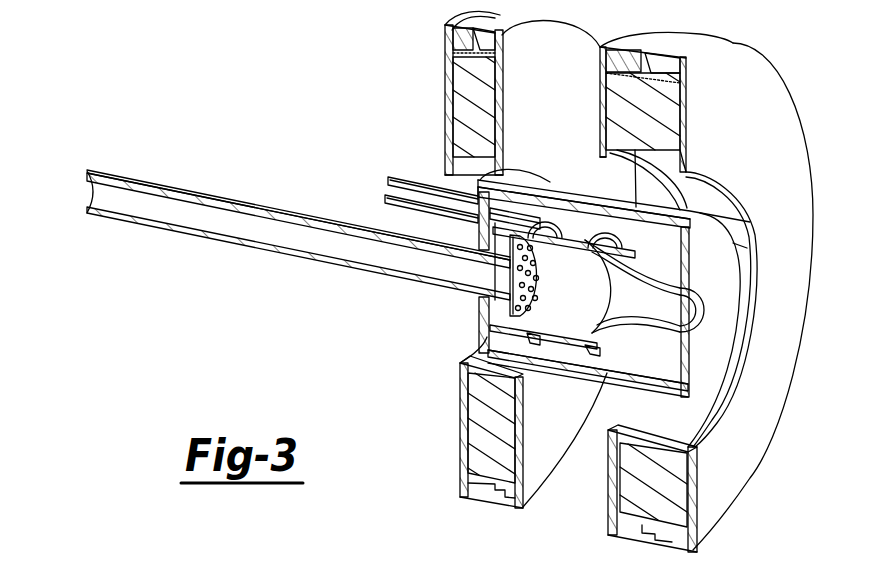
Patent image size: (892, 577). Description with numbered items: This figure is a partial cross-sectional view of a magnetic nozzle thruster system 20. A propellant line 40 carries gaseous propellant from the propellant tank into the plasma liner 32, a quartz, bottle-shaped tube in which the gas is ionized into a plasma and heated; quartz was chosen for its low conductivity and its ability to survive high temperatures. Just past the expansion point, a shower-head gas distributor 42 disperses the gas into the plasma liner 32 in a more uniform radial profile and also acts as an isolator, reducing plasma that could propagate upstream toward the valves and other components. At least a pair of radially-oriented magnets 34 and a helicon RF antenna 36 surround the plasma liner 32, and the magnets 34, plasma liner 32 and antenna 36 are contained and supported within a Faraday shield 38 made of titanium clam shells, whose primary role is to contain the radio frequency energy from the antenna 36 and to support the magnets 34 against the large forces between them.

The thruster system 20 is at (313, 95).
The plasma liner 32 is at (525, 285).
The radially-oriented magnets 34 is at (458, 83).
The helicon RF antenna 36 is at (515, 208).
The Faraday shield 38 is at (625, 356).
The propellant line 40 is at (138, 222).
The shower-head gas distributor 42 is at (545, 308).